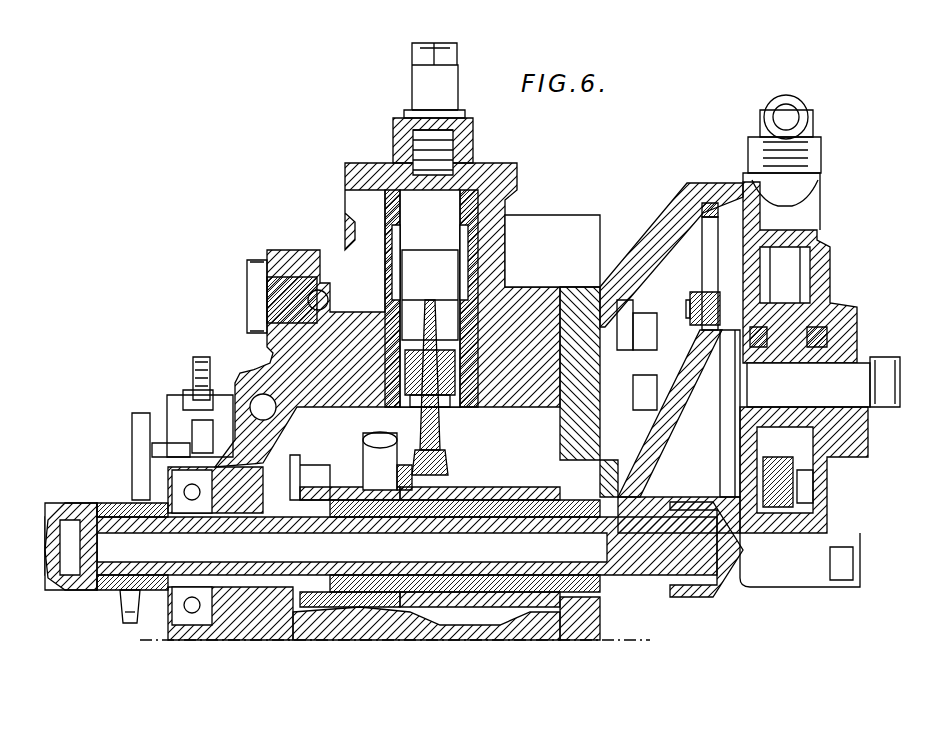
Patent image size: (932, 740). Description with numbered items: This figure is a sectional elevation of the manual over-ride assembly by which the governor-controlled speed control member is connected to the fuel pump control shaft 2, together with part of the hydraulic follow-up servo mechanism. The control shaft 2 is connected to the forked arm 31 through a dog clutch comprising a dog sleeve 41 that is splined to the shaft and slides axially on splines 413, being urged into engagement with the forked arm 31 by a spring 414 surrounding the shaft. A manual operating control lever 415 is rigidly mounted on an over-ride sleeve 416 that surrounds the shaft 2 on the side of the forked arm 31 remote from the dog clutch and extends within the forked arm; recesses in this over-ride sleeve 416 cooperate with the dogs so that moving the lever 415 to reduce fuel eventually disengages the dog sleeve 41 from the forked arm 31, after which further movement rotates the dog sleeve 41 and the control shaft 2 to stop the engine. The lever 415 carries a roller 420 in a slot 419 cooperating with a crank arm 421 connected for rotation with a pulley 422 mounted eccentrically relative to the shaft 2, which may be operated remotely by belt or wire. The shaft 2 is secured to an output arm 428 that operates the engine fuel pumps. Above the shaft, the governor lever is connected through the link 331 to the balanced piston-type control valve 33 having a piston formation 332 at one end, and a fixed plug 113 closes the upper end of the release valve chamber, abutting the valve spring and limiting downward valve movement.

The control shaft 2 is at (222, 527).
The forked arm 31 is at (455, 473).
The balanced piston-type control valve 33 is at (433, 278).
The dog sleeve 41 is at (363, 472).
The fixed plug 113 is at (323, 617).
The link 331 is at (440, 418).
The piston formation 332 is at (372, 300).
The splines 413 is at (332, 513).
The spring 414 is at (337, 490).
The manual operating control lever 415 is at (687, 393).
The over-ride sleeve 416 is at (547, 530).
The slot 419 is at (710, 237).
The roller 420 is at (695, 297).
The crank arm 421 is at (732, 403).
The pulley 422 is at (790, 287).
The output arm 428 is at (128, 605).